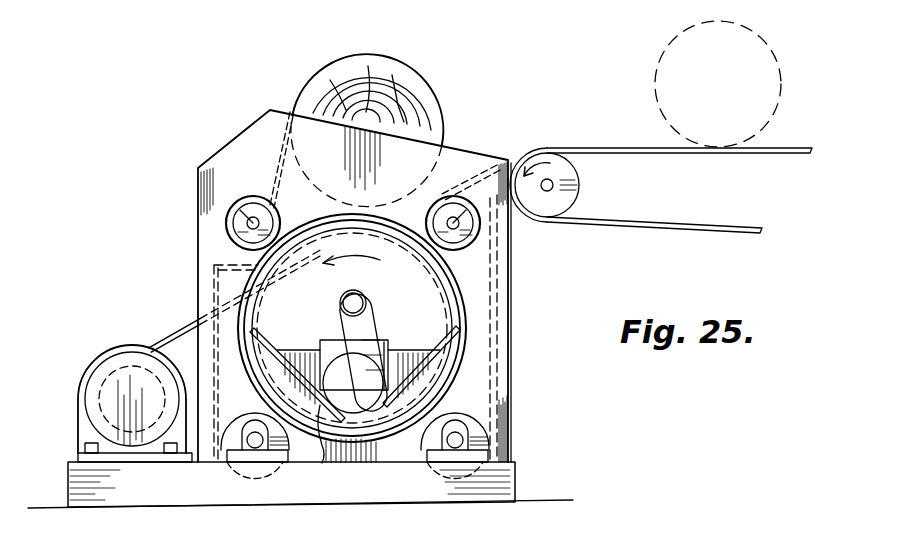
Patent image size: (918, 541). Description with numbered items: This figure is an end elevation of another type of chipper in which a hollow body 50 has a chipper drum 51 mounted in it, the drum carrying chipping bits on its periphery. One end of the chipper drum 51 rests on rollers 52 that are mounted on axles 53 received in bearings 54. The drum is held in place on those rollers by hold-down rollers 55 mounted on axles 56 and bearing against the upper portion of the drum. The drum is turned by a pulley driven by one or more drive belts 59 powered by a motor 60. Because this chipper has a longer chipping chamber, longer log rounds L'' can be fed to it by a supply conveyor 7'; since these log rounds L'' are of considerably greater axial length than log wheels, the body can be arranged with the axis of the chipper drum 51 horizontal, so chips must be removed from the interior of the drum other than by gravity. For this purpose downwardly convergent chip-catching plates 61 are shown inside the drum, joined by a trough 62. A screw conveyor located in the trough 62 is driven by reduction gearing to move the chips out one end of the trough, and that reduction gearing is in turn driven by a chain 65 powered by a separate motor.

The hollow body 50 is at (512, 393).
The chipper drum 51 is at (467, 353).
The rollers 52 is at (288, 433).
The axles 53 is at (248, 448).
The bearings 54 is at (258, 462).
The hold-down rollers 55 is at (233, 238).
The axles 56 is at (248, 212).
The drive belts 59 is at (182, 335).
The motor 60 is at (103, 366).
The chip-catching plates 61 is at (273, 330).
The trough 62 is at (325, 410).
The chain 65 is at (367, 296).
The log rounds L'' is at (536, 114).
The supply conveyor 7' is at (661, 172).